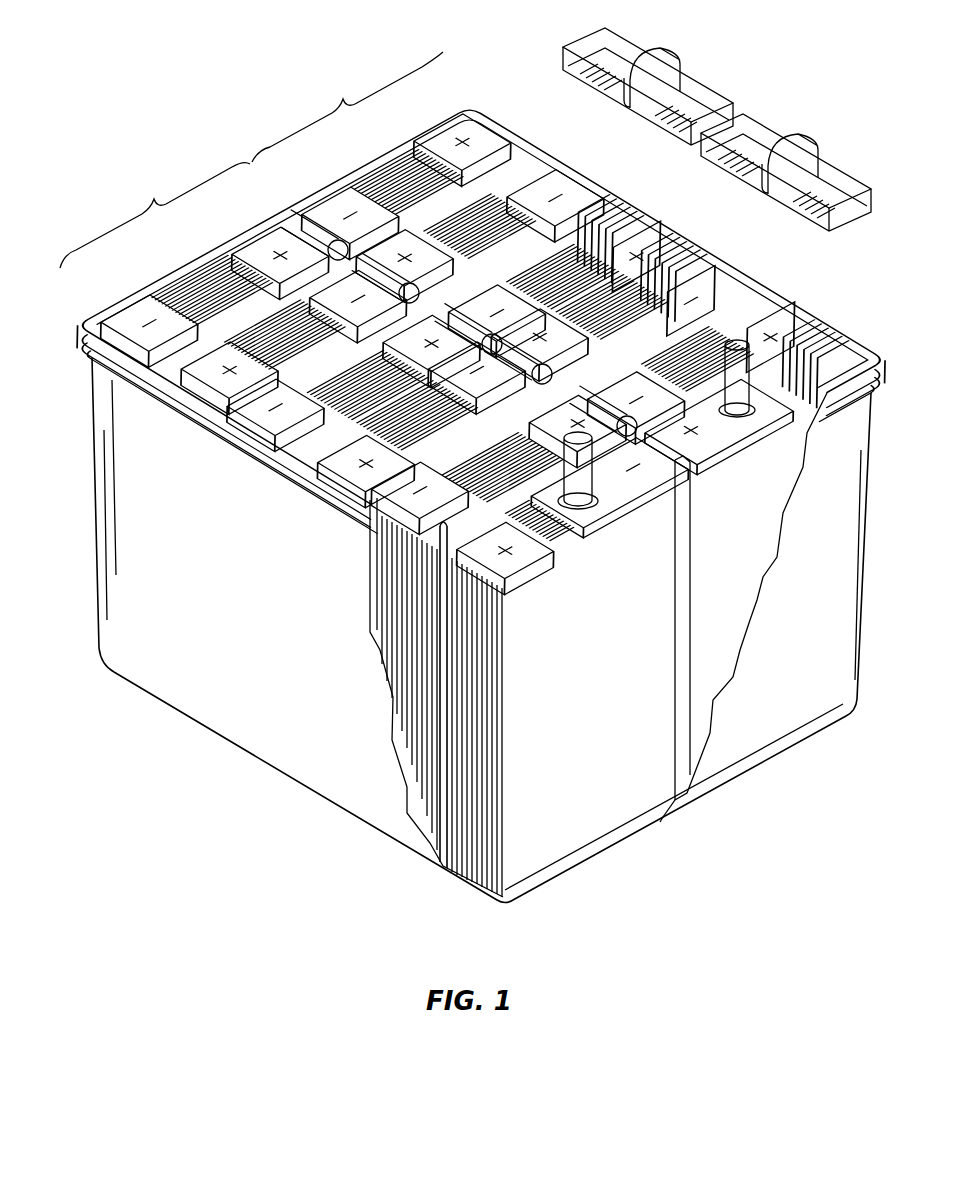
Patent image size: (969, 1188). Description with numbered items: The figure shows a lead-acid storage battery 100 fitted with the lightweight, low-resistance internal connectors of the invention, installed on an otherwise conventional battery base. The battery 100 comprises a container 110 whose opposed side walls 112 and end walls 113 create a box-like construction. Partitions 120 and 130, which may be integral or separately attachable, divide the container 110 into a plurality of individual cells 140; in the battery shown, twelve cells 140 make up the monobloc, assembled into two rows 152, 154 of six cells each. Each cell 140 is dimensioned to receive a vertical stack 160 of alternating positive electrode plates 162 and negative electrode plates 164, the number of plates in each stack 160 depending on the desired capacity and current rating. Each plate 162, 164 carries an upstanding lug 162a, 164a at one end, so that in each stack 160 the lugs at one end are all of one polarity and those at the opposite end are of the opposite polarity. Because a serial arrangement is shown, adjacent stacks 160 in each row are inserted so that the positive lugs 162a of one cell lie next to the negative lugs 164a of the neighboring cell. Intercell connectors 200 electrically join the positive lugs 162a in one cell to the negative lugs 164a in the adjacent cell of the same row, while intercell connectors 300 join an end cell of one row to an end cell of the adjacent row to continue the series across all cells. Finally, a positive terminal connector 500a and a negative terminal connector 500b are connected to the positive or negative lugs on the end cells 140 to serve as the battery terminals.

The lead-acid storage battery 100 is at (250, 88).
The container 110 is at (225, 745).
The side wall 112 is at (150, 613).
The end wall 113 is at (783, 698).
The partition 120 is at (447, 192).
The partition 130 is at (298, 248).
The cell 140 is at (210, 293).
The row of cells 152 is at (155, 215).
The row of cells 154 is at (347, 107).
The vertical stack 160 is at (505, 778).
The positive electrode plate 162 is at (590, 270).
The positive lug 162a is at (633, 268).
The negative electrode plate 164 is at (700, 318).
The negative lug 164a is at (713, 283).
The intercell connector 200 is at (87, 340).
The intercell connector 300 is at (343, 210).
The positive terminal connector 500a is at (795, 380).
The negative terminal connector 500b is at (610, 480).